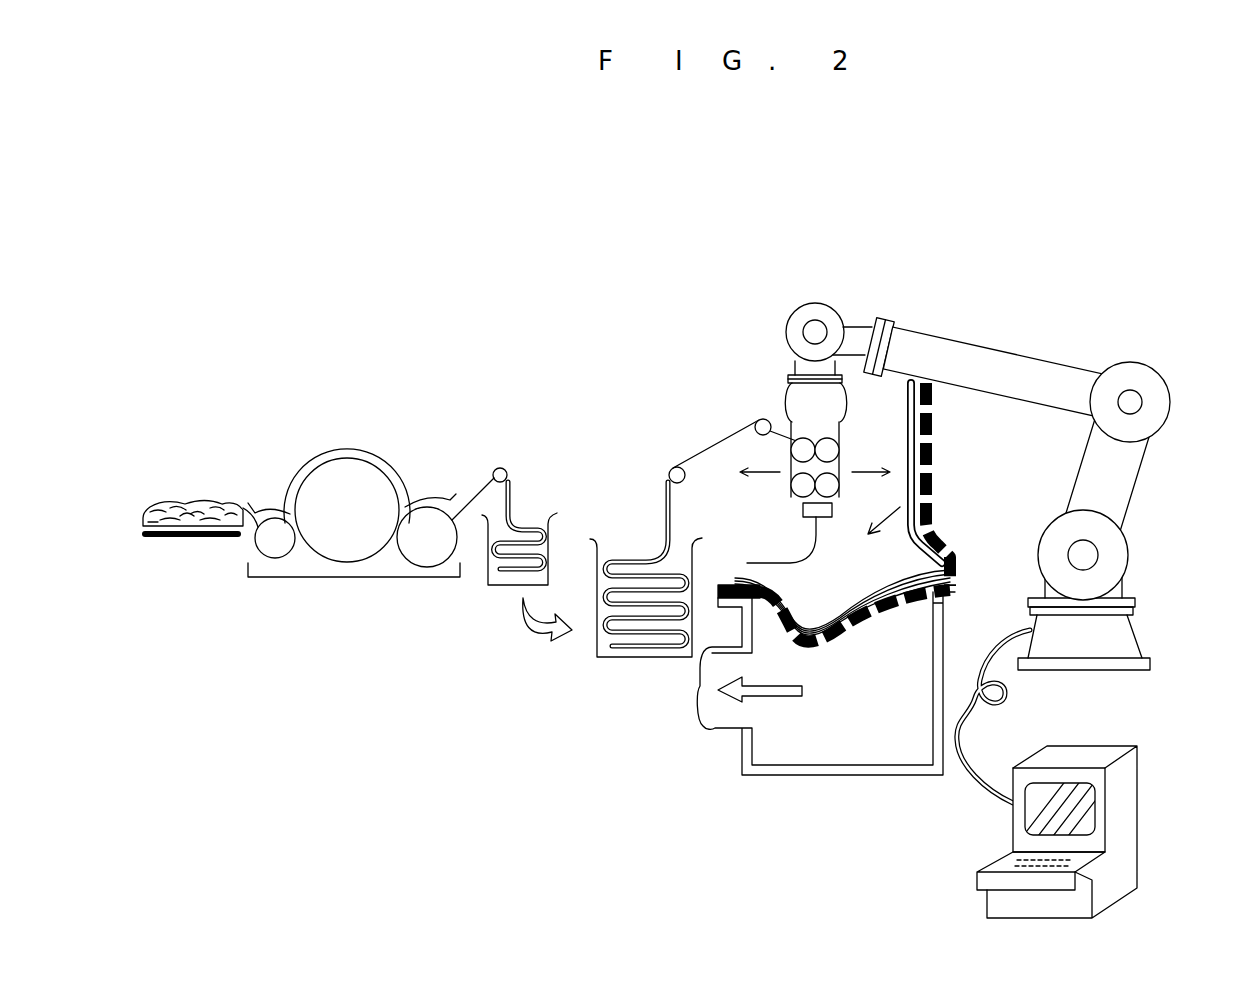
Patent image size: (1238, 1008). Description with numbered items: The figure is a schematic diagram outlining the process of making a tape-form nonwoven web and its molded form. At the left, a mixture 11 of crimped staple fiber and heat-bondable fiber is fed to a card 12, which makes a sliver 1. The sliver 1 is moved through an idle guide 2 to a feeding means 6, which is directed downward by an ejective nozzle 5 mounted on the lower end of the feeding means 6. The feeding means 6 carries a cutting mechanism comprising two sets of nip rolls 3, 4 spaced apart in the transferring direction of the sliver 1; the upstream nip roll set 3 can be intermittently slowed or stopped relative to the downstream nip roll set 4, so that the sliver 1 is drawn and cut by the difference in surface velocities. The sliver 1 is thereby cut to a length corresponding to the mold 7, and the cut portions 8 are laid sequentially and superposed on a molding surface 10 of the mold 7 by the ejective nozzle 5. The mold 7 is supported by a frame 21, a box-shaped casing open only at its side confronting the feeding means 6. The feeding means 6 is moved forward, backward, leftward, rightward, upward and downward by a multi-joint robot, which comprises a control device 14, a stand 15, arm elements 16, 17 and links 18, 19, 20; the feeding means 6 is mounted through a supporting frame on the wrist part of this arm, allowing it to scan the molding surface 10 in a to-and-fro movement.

The sliver 1 is at (707, 438).
The idle guide 2 is at (763, 420).
The nip roll set 3 is at (833, 452).
The nip roll set 4 is at (830, 485).
The ejective nozzle 5 is at (803, 510).
The feeding means 6 is at (792, 478).
The mold 7 is at (862, 617).
The cut portions 8 is at (847, 570).
The molding surface 10 is at (945, 553).
The mixture 11 is at (208, 497).
The card 12 is at (380, 498).
The control device 14 is at (1127, 803).
The stand 15 is at (1125, 640).
The arm element 16 is at (1130, 472).
The arm element 17 is at (1020, 365).
The link 18 is at (1087, 553).
The link 19 is at (1135, 402).
The link 20 is at (815, 328).
The frame 21 is at (830, 777).